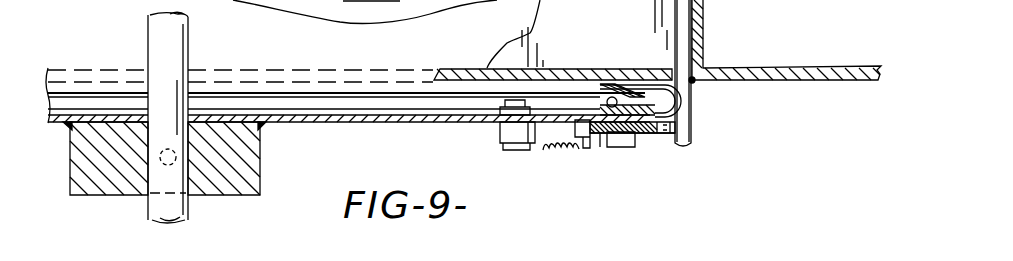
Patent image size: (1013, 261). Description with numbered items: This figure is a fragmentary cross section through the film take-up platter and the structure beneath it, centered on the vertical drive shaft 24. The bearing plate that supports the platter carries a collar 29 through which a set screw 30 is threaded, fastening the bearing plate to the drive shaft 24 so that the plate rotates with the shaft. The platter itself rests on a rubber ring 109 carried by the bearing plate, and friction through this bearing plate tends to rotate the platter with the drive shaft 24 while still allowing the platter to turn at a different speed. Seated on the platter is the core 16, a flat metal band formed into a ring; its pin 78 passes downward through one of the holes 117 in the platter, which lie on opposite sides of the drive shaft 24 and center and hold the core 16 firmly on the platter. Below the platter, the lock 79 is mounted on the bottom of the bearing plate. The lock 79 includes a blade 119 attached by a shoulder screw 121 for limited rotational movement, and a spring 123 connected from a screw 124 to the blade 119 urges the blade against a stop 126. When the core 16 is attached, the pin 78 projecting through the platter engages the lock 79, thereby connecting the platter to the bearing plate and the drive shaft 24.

The core 16 is at (703, 8).
The vertical drive shaft 24 is at (148, 36).
The collar 29 is at (260, 172).
The set screw 30 is at (176, 152).
The pin 78 is at (694, 116).
The lock 79 is at (663, 160).
The rubber ring 109 is at (594, 82).
The holes 117 is at (695, 90).
The blade 119 is at (665, 143).
The shoulder screw 121 is at (617, 148).
The spring 123 is at (560, 152).
The screw 124 is at (517, 148).
The stop 126 is at (585, 150).